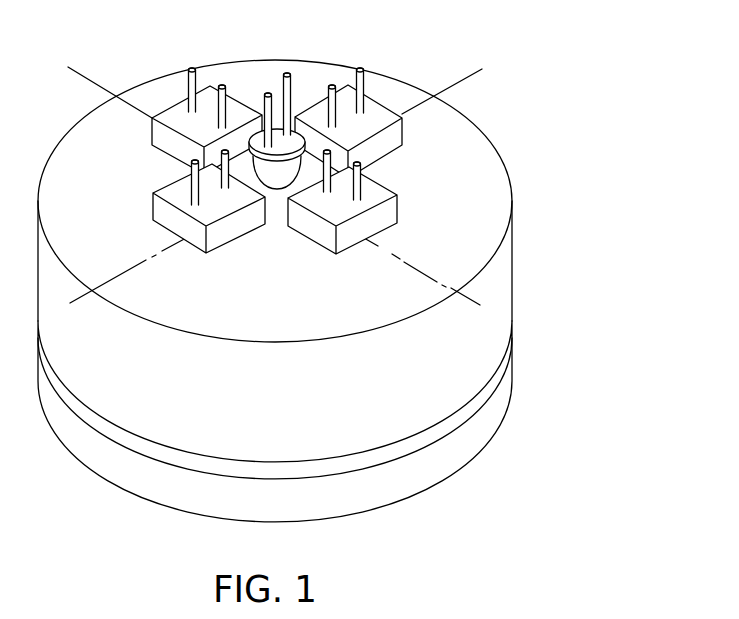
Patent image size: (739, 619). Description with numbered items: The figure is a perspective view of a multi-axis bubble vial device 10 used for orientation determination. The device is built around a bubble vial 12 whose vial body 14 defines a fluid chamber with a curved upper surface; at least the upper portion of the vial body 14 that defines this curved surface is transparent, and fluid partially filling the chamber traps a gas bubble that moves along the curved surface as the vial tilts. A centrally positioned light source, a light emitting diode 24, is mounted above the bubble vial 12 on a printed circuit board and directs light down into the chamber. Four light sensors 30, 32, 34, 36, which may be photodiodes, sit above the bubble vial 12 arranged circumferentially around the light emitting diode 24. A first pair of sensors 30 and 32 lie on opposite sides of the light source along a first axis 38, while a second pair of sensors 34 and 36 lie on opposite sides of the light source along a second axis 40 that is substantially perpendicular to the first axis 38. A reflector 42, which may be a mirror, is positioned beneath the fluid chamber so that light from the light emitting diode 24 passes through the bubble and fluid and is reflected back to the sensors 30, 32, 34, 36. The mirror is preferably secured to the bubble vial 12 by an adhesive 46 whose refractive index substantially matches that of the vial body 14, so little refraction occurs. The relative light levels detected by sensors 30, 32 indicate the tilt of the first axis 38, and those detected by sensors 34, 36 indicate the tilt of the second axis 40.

The bubble vial device 10 is at (533, 200).
The bubble vial 12 is at (492, 315).
The vial body 14 is at (475, 133).
The light emitting diode 24 is at (277, 180).
The light sensor 30 is at (348, 108).
The light sensor 32 is at (212, 210).
The light sensor 34 is at (382, 190).
The light sensor 36 is at (181, 128).
The first axis 38 is at (460, 87).
The second axis 40 is at (408, 264).
The reflector 42 is at (422, 475).
The adhesive 46 is at (490, 383).